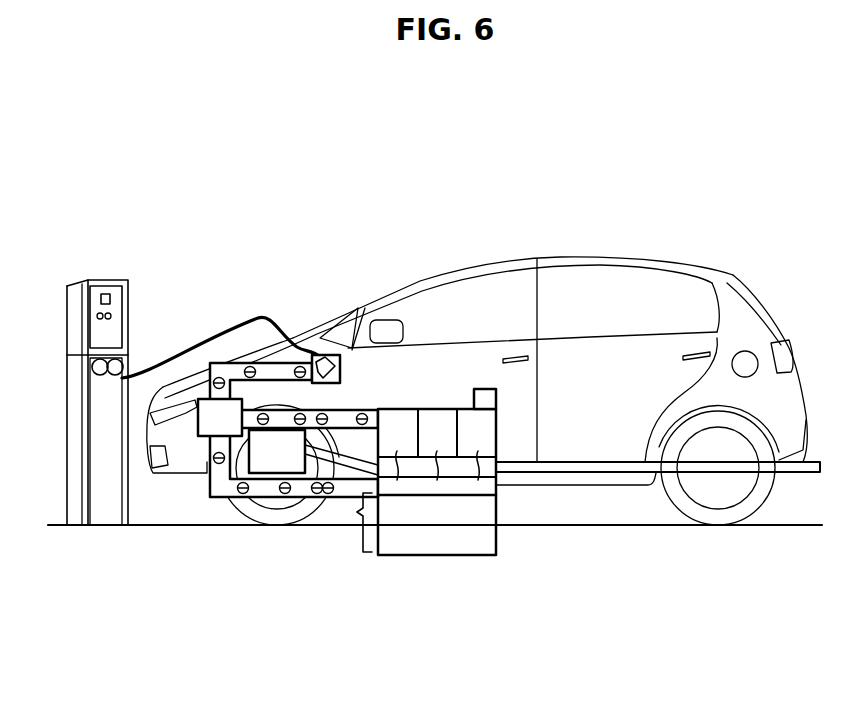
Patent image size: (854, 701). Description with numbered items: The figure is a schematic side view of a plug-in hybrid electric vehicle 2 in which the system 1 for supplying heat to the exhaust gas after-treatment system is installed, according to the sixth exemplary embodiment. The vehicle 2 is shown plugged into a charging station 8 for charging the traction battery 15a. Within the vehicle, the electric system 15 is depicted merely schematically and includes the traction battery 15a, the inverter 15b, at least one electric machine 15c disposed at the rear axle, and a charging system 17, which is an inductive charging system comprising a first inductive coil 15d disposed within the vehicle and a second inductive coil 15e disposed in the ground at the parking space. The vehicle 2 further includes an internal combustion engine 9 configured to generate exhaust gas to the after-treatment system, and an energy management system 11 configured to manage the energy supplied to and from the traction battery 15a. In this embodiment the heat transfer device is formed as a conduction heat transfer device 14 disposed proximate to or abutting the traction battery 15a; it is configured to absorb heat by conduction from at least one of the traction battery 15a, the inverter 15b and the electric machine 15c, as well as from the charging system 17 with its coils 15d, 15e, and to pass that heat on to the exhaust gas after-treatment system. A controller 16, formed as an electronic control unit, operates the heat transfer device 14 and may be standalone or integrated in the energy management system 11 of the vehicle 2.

The system for supplying heat 1 is at (552, 505).
The plug-in hybrid electric vehicle 2 is at (582, 246).
The charging station 8 is at (110, 279).
The internal combustion engine 9 is at (267, 453).
The energy management system 11 is at (205, 427).
The conduction heat transfer device 14 is at (478, 455).
The electric system 15 is at (453, 499).
The traction battery 15a is at (397, 420).
The inverter 15b is at (437, 420).
The electric machine 15c is at (492, 418).
The first inductive coil 15d is at (428, 489).
The second inductive coil 15e is at (400, 548).
The controller 16 is at (484, 398).
The charging system 17 is at (345, 522).